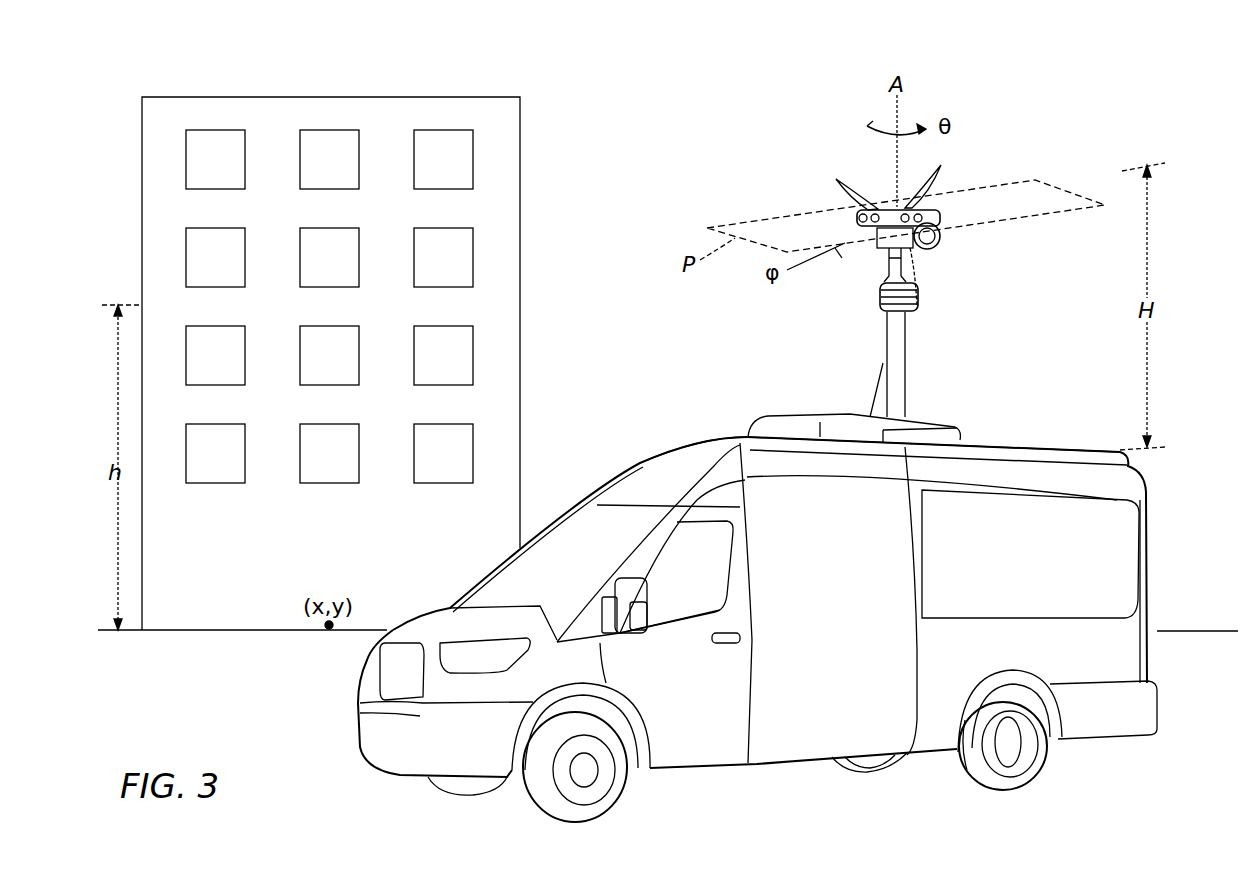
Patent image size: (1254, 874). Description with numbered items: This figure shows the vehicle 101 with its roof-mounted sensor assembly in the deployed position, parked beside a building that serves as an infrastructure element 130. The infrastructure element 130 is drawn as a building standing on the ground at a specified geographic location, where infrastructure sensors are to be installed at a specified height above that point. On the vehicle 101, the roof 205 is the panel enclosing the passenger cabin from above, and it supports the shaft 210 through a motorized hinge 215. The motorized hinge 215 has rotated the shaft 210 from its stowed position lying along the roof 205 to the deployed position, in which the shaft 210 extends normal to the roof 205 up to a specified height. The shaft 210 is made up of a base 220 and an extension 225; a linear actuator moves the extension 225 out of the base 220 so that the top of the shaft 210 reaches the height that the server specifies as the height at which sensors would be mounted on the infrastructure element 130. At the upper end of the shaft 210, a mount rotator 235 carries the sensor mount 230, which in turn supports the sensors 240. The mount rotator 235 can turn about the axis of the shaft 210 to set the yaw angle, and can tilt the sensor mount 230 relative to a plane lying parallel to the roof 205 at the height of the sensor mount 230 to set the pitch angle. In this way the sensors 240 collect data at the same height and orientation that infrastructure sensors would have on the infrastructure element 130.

The vehicle 101 is at (1147, 515).
The infrastructure element 130 is at (487, 96).
The roof 205 is at (745, 440).
The shaft 210 is at (899, 388).
The motorized hinge 215 is at (812, 427).
The base 220 is at (899, 353).
The extension 225 is at (911, 252).
The sensor mount 230 is at (941, 237).
The mount rotator 235 is at (877, 240).
The sensors 240 is at (853, 191).